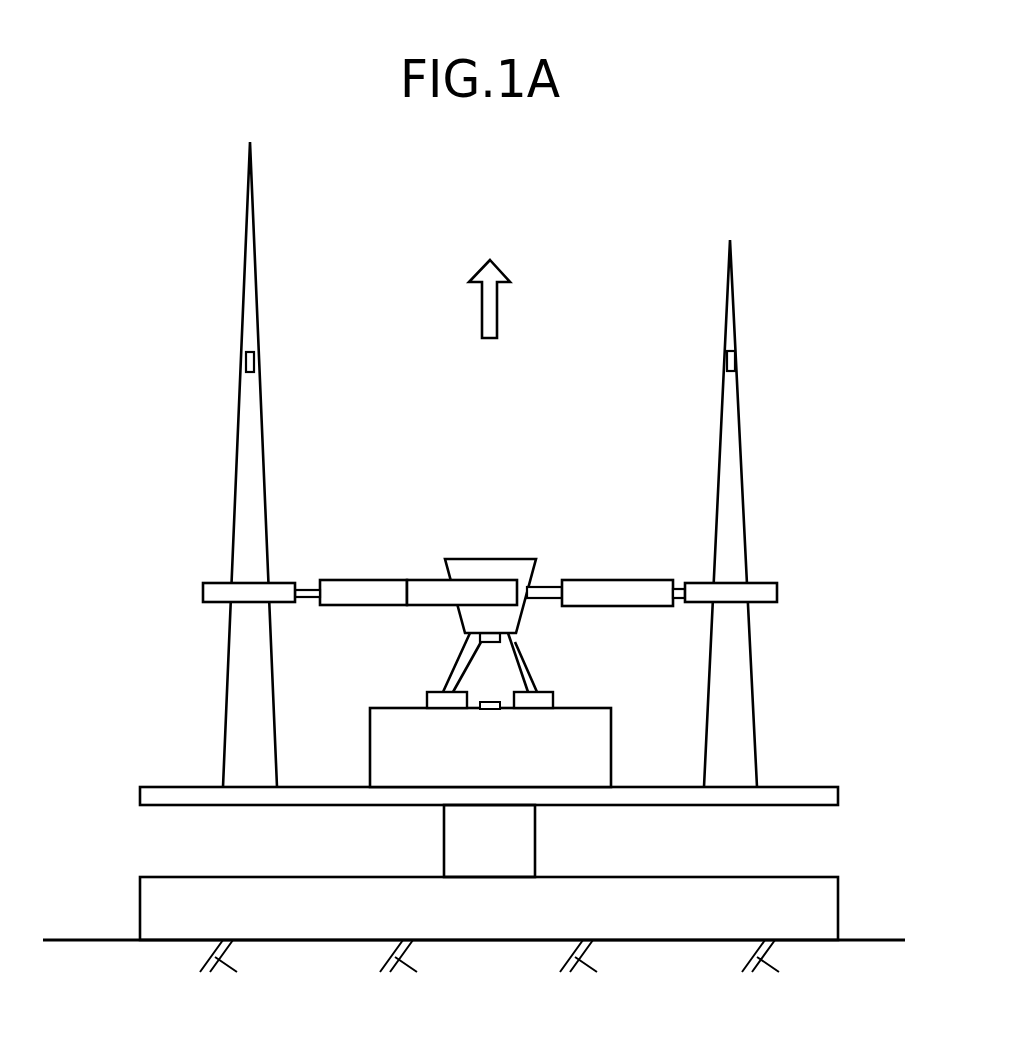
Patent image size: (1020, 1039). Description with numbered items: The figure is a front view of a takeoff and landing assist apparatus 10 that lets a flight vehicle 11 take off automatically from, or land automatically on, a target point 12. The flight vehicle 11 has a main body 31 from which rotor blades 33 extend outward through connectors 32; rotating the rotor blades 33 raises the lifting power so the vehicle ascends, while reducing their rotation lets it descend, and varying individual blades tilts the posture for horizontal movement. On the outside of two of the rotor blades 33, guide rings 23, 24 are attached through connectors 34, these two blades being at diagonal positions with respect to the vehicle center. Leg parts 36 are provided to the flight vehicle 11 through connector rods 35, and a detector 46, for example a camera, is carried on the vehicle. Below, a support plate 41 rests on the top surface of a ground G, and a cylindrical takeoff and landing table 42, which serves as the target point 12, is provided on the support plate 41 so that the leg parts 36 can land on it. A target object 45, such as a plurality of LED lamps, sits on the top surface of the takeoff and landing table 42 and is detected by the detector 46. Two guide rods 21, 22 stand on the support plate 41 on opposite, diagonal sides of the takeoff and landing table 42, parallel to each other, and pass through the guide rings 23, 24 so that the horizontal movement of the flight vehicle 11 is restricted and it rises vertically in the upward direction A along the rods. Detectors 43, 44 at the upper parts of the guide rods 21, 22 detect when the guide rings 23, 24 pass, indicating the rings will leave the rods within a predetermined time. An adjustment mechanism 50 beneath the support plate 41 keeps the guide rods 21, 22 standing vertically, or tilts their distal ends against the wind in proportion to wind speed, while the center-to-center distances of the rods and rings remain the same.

The takeoff and landing assist apparatus 10 is at (832, 316).
The flight vehicle 11 is at (513, 520).
The target point 12 is at (592, 705).
The guide rod 21 is at (237, 465).
The guide rod 22 is at (745, 465).
The guide ring 23 is at (203, 593).
The guide ring 24 is at (777, 593).
The main body 31 is at (490, 559).
The connector 32 is at (547, 590).
The rotor blade 33 is at (365, 592).
The connector 34 is at (305, 588).
The connector rod 35 is at (483, 640).
The leg part 36 is at (445, 700).
The support plate 41 is at (805, 795).
The takeoff and landing table 42 is at (400, 770).
The detector 43 is at (246, 362).
The detector 44 is at (735, 361).
The target object 45 is at (490, 709).
The detector 46 is at (490, 655).
The adjustment mechanism 50 is at (537, 843).
The upward direction A is at (498, 309).
The ground G is at (96, 940).